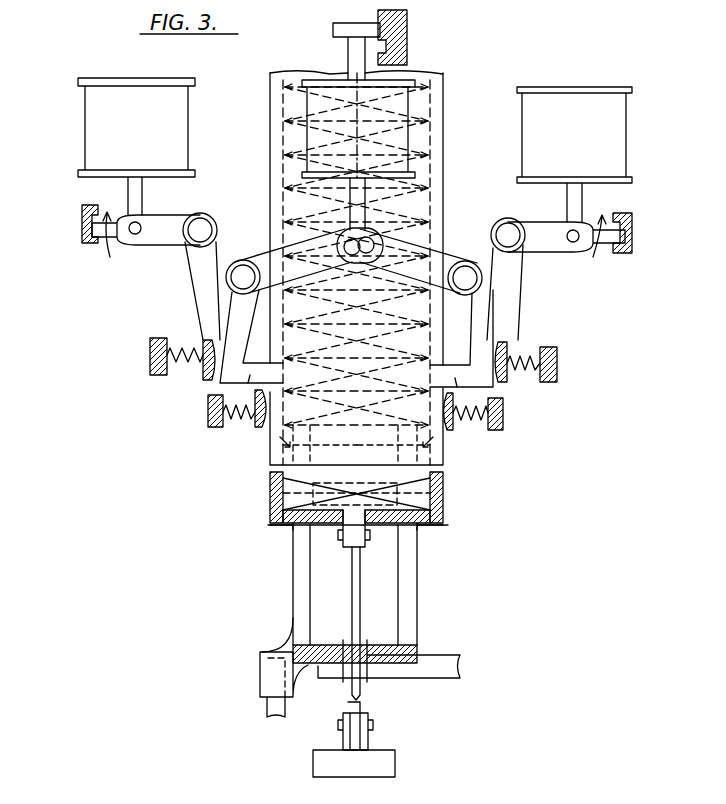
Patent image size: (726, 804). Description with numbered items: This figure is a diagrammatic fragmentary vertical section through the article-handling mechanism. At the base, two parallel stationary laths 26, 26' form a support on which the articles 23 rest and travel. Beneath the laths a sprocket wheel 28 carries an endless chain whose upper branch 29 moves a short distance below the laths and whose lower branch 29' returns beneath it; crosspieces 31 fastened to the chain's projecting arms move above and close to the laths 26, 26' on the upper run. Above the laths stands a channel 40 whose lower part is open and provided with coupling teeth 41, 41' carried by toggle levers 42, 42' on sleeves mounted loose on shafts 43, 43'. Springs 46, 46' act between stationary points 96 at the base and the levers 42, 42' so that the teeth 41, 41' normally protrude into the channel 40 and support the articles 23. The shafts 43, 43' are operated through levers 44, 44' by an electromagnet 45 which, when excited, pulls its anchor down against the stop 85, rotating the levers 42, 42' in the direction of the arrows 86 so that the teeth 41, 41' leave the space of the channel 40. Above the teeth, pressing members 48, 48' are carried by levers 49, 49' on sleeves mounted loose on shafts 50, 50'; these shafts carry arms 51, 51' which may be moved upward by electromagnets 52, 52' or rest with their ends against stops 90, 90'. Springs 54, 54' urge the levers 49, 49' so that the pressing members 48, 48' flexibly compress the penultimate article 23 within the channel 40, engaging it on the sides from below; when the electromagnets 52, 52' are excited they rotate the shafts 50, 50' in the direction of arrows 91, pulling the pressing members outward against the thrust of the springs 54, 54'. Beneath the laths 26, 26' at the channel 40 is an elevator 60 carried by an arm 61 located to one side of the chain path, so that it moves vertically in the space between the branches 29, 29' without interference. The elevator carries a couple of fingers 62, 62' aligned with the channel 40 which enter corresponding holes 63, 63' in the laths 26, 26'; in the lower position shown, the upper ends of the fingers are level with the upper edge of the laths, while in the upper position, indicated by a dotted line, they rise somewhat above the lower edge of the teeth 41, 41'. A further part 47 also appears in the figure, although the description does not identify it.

The articles 23 is at (293, 493).
The stationary lath 26 is at (254, 529).
The stationary lath 26' is at (464, 519).
The sprocket wheel 28 is at (360, 598).
The upper branch of chain 29 is at (365, 544).
The lower branch of chain 29' is at (330, 726).
The crosspieces 31 is at (445, 492).
The channel 40 is at (427, 102).
The coupling tooth 41 is at (428, 445).
The coupling tooth 41' is at (287, 449).
The toggle lever 42 is at (491, 338).
The toggle lever 42' is at (211, 336).
The shaft 43 is at (502, 278).
The shaft 43' is at (245, 259).
The lever 44 is at (407, 254).
The lever 44' is at (293, 243).
The electromagnet 45 is at (305, 103).
The spring 46 is at (494, 429).
The spring 46' is at (221, 423).
The shaft 47 is at (366, 200).
The pressing member 48 is at (521, 376).
The pressing member 48' is at (180, 371).
The lever 49 is at (525, 292).
The lever 49' is at (180, 291).
The shaft 50 is at (502, 218).
The shaft 50' is at (210, 214).
The arm 51 is at (566, 218).
The arm 51' is at (146, 213).
The electromagnet 52 is at (592, 154).
The electromagnet 52' is at (116, 146).
The spring 54 is at (576, 335).
The spring 54' is at (133, 341).
The elevator 60 is at (262, 652).
The arm 61 is at (268, 707).
The finger 62 is at (269, 585).
The finger 62' is at (441, 585).
The hole 63 is at (265, 542).
The hole 63' is at (460, 542).
The stop 85 is at (405, 22).
The arrows 86 is at (231, 336).
The stop 90 is at (650, 233).
The stop 90' is at (63, 231).
The arrows 91 is at (360, 225).
The stationary points 96 is at (150, 355).